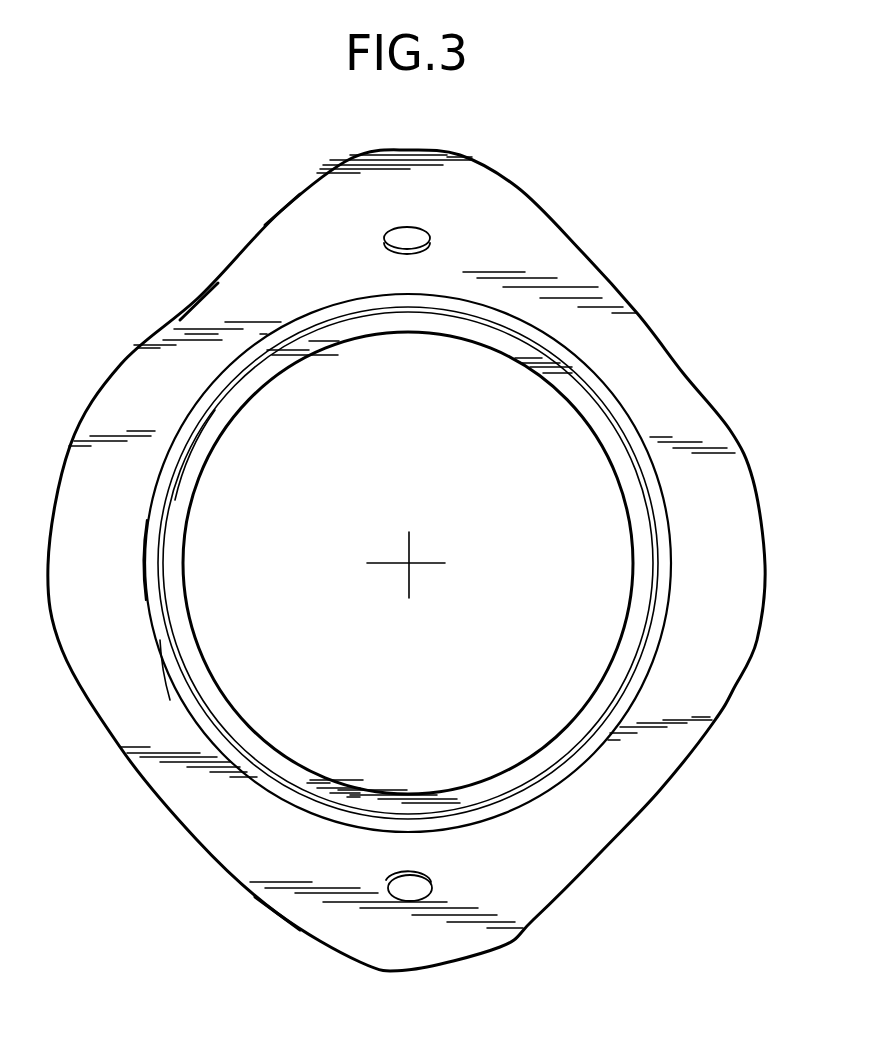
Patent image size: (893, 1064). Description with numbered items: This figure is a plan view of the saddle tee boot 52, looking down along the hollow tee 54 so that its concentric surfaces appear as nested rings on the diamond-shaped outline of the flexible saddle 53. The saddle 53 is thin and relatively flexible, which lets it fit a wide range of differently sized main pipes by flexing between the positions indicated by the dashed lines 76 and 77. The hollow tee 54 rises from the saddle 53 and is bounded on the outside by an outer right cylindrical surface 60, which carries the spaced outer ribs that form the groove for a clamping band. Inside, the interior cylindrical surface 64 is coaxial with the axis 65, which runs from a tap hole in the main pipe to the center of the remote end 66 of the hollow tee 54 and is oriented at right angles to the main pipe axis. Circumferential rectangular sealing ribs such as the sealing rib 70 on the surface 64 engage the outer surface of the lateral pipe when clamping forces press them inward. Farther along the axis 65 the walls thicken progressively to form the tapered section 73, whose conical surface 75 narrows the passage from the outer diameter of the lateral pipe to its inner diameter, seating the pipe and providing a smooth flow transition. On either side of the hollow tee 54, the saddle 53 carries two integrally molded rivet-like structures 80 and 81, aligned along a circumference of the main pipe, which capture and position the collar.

The saddle tee boot 52 is at (121, 365).
The flexible saddle 53 is at (199, 302).
The hollow tee 54 is at (157, 485).
The outer right cylindrical surface 60 is at (144, 581).
The interior cylindrical surface 64 is at (163, 563).
The axis 65 is at (410, 562).
The remote end 66 is at (175, 684).
The sealing rib 70 is at (166, 615).
The tapered section 73 is at (229, 409).
The conical surface 75 is at (197, 464).
The dashed line 76 is at (288, 213).
The dashed line 77 is at (293, 911).
The rivet-like structure 80 is at (421, 238).
The rivet-like structure 81 is at (426, 886).